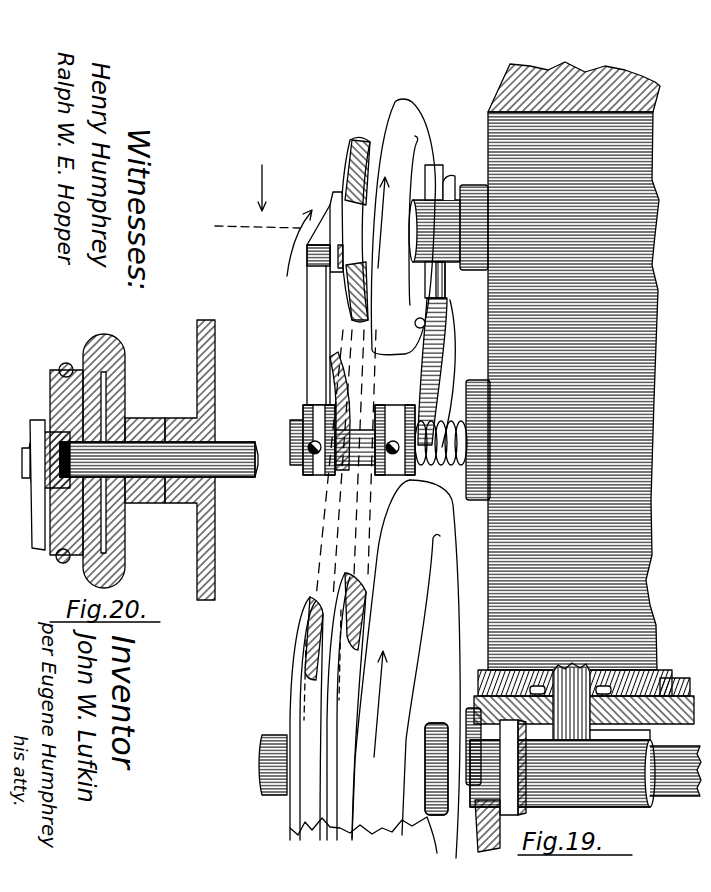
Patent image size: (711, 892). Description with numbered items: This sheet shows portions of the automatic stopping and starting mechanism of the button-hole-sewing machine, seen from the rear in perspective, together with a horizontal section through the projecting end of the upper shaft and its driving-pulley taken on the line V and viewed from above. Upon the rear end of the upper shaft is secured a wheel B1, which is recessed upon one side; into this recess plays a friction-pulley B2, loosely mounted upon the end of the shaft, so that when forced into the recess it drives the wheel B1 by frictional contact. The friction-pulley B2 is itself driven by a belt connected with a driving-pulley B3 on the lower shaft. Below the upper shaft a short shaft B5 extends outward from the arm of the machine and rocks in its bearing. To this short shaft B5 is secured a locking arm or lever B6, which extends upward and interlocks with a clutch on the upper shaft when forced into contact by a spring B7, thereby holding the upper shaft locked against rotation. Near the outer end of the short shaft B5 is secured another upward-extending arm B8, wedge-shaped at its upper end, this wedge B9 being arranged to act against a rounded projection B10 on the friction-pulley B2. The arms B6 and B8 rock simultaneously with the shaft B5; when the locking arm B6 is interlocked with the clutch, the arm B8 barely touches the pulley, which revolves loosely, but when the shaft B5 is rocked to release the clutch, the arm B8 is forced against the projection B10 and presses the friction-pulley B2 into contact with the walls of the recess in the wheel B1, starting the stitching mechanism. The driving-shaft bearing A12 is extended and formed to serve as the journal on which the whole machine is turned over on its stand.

In FIG. 20, the wheel B1 is at (128, 360).
In FIG. 20, the friction-pulley B2 is at (50, 388).
In FIG. 19, the friction-pulley B2 is at (351, 140).
In FIG. 19, the driving-pulley B3 is at (298, 668).
In FIG. 19, the short shaft B5 is at (292, 436).
In FIG. 19, the locking arm or lever B6 is at (452, 173).
In FIG. 19, the spring B7 is at (393, 105).
In FIG. 20, the arm B8 is at (30, 550).
In FIG. 19, the arm B8 is at (318, 333).
In FIG. 19, the wedge B9 is at (308, 240).
In FIG. 19, the rounded projection B10 is at (336, 192).
In FIG. 19, the driving-shaft bearing A12 is at (542, 722).
In FIG. 19, the section line V is at (251, 219).